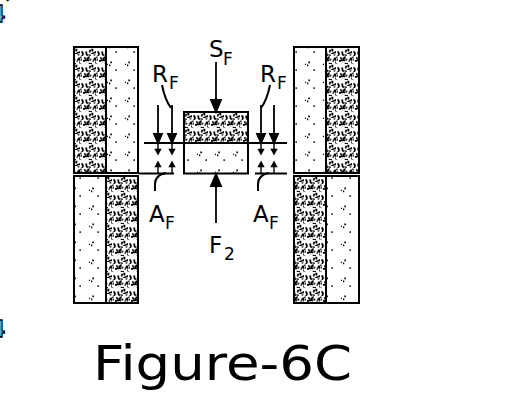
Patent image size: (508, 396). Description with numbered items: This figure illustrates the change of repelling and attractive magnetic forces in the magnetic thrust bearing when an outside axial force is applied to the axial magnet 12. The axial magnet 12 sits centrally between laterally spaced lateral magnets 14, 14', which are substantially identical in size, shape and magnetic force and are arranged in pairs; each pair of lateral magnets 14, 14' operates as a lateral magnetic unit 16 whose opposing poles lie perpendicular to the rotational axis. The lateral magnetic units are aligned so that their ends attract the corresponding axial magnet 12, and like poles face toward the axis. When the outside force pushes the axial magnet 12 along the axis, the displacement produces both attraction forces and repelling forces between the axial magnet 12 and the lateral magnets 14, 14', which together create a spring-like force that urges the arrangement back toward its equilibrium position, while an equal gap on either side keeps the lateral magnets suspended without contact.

The axial magnet 12 is at (205, 112).
The lateral magnet 14 is at (215, 239).
The adjacent lateral magnet 14' is at (216, 110).
The lateral magnetic unit 16 is at (294, 270).